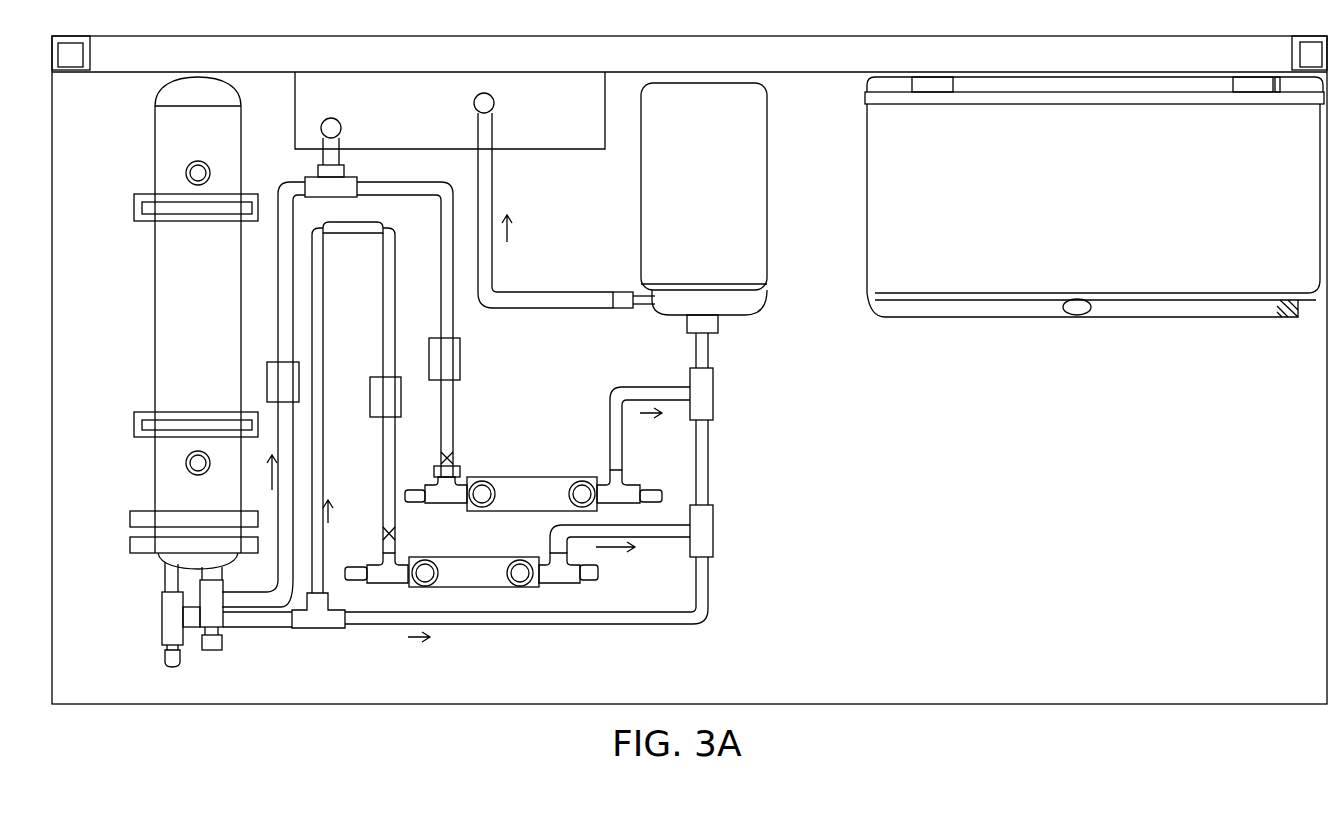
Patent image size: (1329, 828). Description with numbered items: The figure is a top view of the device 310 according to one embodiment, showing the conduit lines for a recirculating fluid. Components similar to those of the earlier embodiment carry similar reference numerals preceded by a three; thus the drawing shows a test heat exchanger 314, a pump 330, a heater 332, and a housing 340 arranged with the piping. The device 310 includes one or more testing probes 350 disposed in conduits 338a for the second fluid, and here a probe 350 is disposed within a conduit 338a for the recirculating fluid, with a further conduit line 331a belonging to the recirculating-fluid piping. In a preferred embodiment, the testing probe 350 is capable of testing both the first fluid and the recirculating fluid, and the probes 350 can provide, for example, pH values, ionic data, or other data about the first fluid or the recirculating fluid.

The device 310 is at (892, 432).
The tank 314 is at (153, 292).
The reservoir tank 330 is at (768, 130).
The pipe 331a is at (375, 482).
The pipe 332 is at (540, 152).
The conduit 338a is at (702, 473).
The container 340 is at (867, 222).
The testing probe 350 is at (523, 477).